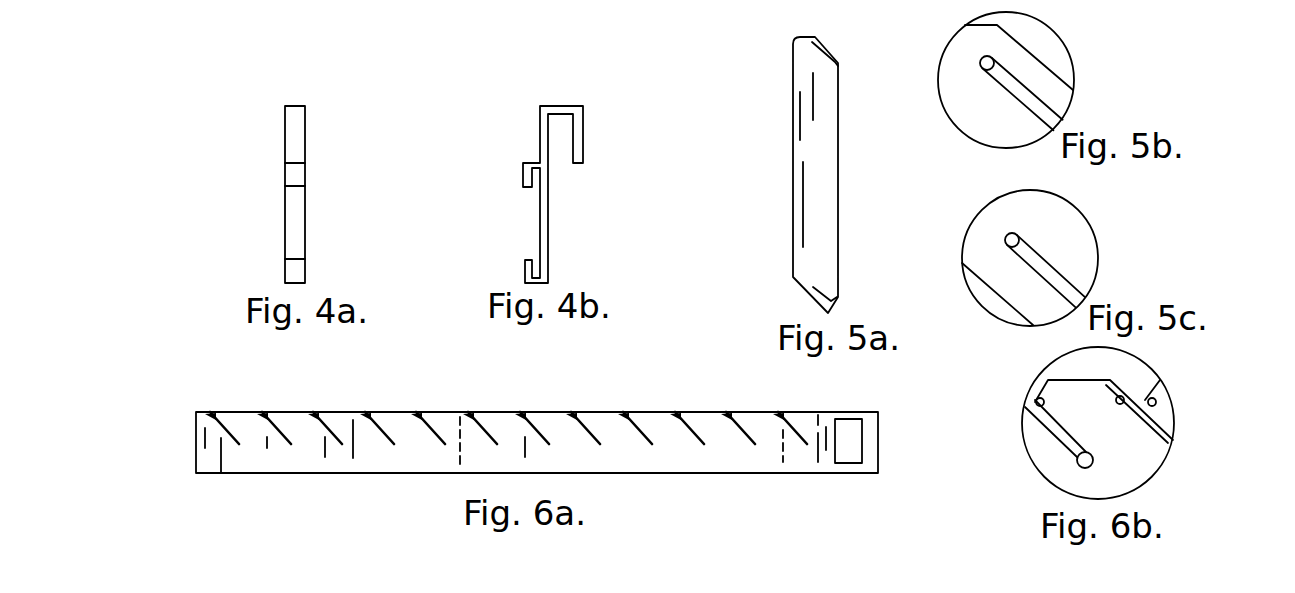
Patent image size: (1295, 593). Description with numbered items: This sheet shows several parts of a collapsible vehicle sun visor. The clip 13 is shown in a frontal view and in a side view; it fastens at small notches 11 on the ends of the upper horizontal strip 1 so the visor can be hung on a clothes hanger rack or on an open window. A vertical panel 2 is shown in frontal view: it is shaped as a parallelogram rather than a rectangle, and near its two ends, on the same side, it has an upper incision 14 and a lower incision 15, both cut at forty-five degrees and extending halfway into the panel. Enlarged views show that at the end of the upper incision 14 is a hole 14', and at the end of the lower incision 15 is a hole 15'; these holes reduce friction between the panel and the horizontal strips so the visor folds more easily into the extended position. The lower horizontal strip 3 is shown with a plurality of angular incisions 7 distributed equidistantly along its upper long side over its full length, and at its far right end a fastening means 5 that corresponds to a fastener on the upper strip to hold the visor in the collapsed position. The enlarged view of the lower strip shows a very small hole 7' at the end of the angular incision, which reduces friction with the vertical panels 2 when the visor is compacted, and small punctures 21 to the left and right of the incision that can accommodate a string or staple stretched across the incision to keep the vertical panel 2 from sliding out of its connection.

In FIG. 4A, the upper horizontal strip 1 is at (125, 0).
In FIG. 4A, the small notch 11 is at (241, 14).
In FIG. 4A, the clip 13 is at (296, 106).
In FIG. 4B, the clip 13 is at (558, 106).
In FIG. 5A, the vertical panel 2 is at (822, 157).
In FIG. 5A, the upper incision 14 is at (772, 74).
In FIG. 5A, the lower incision 15 is at (879, 286).
In FIG. 5B, the hole 14' is at (1061, 69).
In FIG. 5C, the hole 15' is at (1086, 246).
In FIG. 6A, the lower horizontal strip 3 is at (210, 458).
In FIG. 6A, the angular incision 7 is at (506, 389).
In FIG. 6A, the fastening means 5 is at (852, 438).
In FIG. 6B, the small puncture 21 is at (1157, 402).
In FIG. 6B, the hole 7' is at (1133, 434).